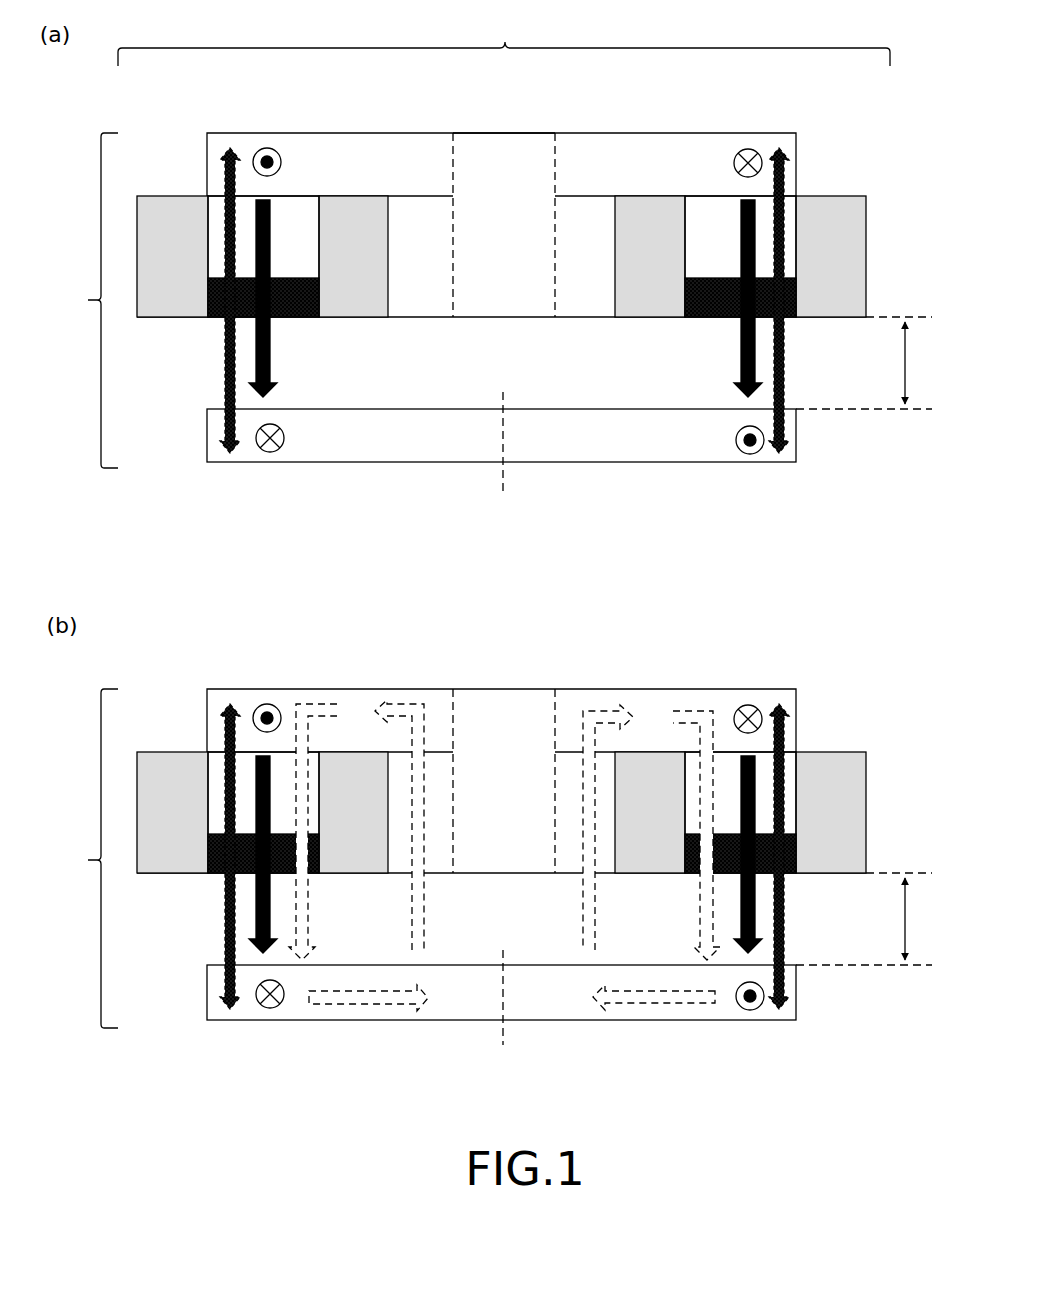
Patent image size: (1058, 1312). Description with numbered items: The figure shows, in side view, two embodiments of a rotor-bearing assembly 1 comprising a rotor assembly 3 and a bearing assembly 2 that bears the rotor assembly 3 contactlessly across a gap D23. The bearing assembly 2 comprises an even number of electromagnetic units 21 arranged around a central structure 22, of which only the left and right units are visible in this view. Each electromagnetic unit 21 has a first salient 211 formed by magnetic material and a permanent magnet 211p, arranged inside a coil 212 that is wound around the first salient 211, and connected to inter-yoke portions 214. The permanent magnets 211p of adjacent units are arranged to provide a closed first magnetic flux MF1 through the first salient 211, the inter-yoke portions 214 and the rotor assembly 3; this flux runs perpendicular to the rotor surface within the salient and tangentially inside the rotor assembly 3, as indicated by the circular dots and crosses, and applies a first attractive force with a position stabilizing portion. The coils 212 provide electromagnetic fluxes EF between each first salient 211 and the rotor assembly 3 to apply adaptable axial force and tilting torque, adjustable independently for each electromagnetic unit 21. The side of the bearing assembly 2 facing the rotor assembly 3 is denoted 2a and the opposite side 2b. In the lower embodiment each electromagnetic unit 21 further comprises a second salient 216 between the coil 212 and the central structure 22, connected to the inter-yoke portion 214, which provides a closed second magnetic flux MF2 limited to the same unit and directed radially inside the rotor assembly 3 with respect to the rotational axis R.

The rotor-bearing assembly 1 is at (87, 580).
The bearing assembly 2 is at (504, 34).
The rotor assembly 3 is at (804, 437).
The electromagnetic unit 21 is at (373, 110).
The central structure of bearing assembly 22 is at (457, 173).
The side of the bearing assembly facing towards the rotor assembly 2a is at (587, 320).
The side of the bearing assembly facing away from the rotor assembly 2b is at (483, 126).
The first salient 211 is at (204, 214).
The permanent magnet 211p is at (303, 299).
The coil 212 is at (154, 262).
The inter-yoke portions 214 is at (303, 131).
The second salient 216 is at (563, 853).
The gap between bearing assembly and rotor assembly D23 is at (879, 641).
The electromagnetic flux EF is at (223, 388).
The first magnetic flux MF1 is at (254, 150).
The second magnetic flux MF2 is at (311, 887).
The rotational axis R is at (504, 736).